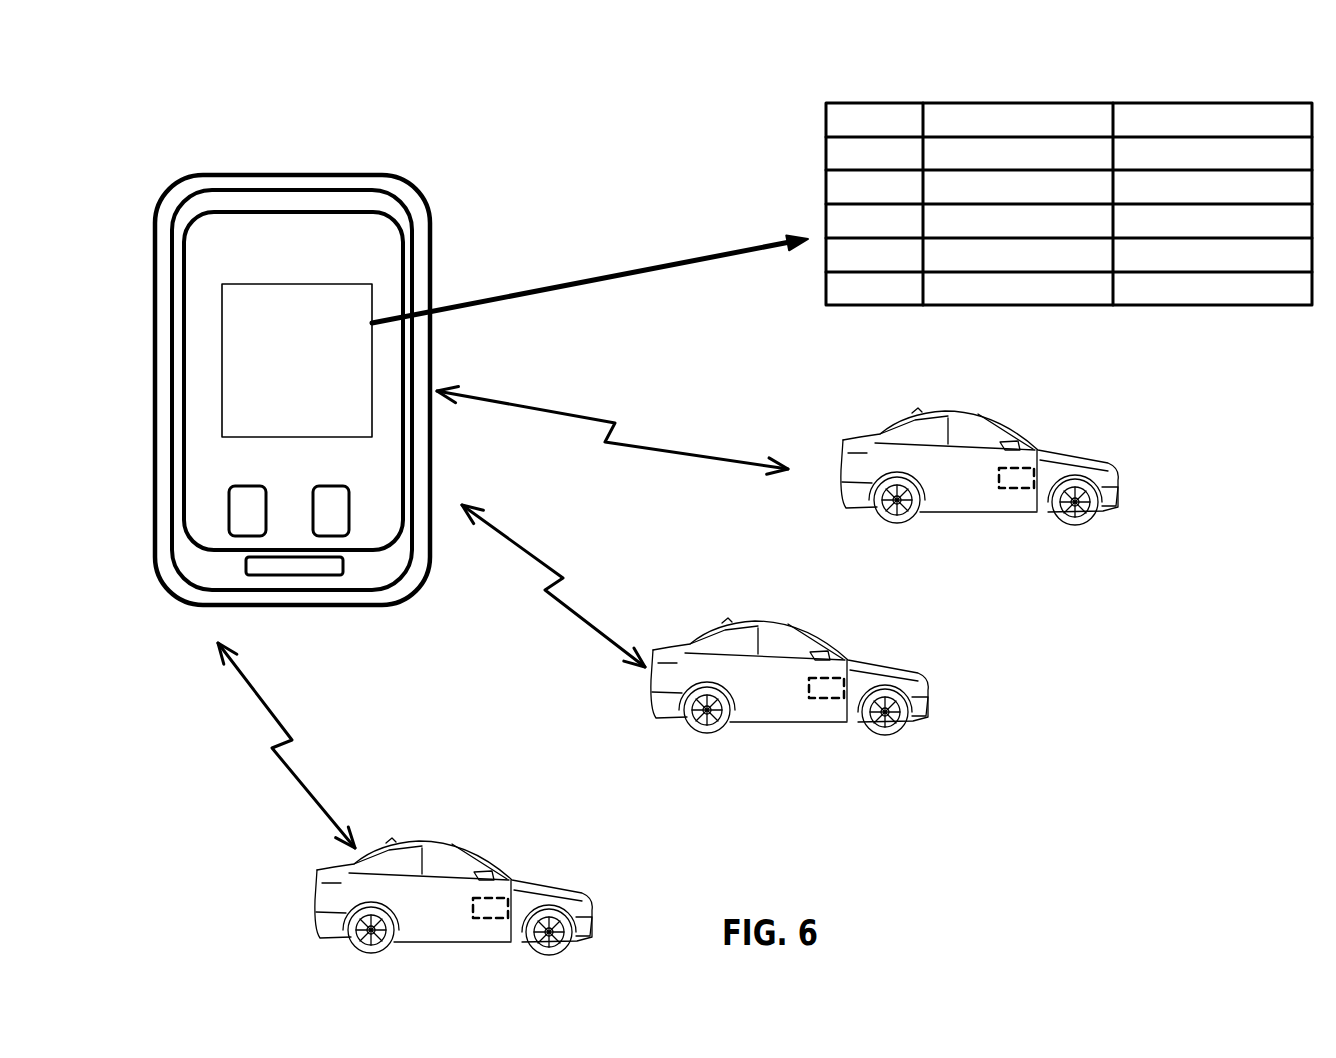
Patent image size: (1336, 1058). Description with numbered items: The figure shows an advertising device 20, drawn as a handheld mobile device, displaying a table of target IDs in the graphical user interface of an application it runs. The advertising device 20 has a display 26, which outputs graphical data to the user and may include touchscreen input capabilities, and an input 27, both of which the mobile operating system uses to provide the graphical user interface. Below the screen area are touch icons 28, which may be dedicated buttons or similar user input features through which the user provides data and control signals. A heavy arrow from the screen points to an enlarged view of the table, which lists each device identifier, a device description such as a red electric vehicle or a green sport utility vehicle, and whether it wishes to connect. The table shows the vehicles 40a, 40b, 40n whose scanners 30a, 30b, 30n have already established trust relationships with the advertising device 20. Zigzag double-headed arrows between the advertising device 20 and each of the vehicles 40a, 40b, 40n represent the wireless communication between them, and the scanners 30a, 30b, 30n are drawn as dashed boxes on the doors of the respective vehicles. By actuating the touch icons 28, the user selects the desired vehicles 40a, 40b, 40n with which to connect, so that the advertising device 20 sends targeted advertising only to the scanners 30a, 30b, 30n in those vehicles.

The advertising device 20 is at (362, 607).
The display 26 is at (226, 554).
The input 27 is at (297, 577).
The touch icons 28 is at (267, 510).
The vehicle 40a is at (963, 413).
The vehicle 40b is at (789, 654).
The vehicle 40n is at (453, 874).
The scanner 30a is at (1025, 468).
The scanner 30b is at (858, 660).
The scanner 30n is at (522, 880).